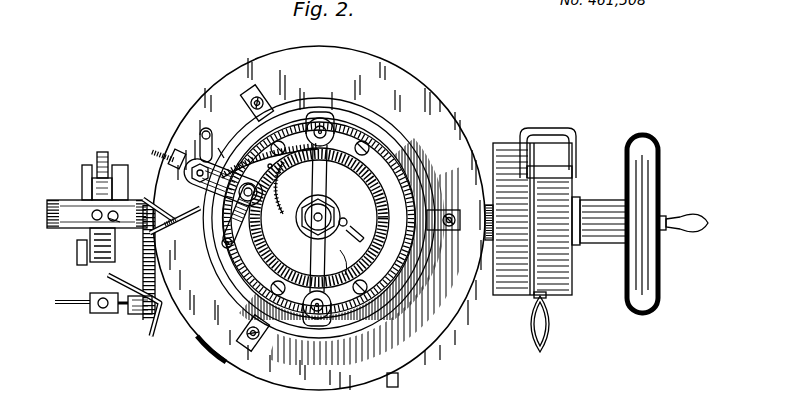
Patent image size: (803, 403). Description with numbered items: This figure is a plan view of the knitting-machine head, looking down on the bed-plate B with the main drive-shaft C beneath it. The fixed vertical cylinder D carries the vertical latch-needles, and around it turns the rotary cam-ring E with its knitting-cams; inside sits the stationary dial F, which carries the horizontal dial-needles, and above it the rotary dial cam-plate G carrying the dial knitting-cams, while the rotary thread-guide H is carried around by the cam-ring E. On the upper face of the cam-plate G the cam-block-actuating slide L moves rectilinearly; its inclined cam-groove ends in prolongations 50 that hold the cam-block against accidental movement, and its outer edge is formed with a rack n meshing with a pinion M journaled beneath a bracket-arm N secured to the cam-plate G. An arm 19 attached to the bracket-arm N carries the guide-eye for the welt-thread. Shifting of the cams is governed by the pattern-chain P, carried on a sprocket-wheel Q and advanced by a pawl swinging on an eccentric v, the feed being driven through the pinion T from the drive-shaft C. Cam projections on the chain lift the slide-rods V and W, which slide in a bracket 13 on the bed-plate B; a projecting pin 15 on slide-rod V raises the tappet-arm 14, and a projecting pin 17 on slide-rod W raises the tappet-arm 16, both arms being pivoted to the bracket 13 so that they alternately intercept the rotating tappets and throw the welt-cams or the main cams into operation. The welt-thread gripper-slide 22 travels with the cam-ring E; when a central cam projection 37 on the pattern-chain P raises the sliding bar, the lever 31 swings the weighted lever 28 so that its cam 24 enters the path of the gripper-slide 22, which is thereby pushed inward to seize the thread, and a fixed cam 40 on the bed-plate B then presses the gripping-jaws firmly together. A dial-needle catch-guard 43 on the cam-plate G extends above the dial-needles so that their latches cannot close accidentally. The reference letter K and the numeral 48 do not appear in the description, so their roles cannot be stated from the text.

The bed-plate B is at (319, 218).
The main drive-shaft C is at (484, 224).
The fixed vertical cylinder D is at (319, 218).
The rotary cam-ring E is at (273, 218).
The stationary dial F is at (351, 224).
The rotary dial cam-plate G is at (349, 258).
The rotary thread-guide H is at (410, 218).
The hub K is at (318, 208).
The cam-block-actuating slide L is at (315, 219).
The pinion M is at (262, 163).
The rack n is at (267, 158).
The bracket-arm N is at (223, 182).
The pattern-chain P is at (199, 148).
The sprocket-wheel Q is at (87, 166).
The pinion T is at (205, 140).
The slide-rod V is at (92, 215).
The slide-rod W is at (120, 213).
The eccentric v is at (160, 124).
The bracket 13 is at (47, 216).
The tappet-arm 14 is at (159, 206).
The projecting pin 15 is at (92, 188).
The tappet-arm 16 is at (175, 222).
The projecting pin 17 is at (116, 220).
The arm 19 is at (238, 214).
The gripper-slide 22 is at (162, 149).
The cam 24 is at (158, 300).
The lever 28 is at (130, 312).
The lever 31 is at (134, 302).
The cam projections 37 is at (102, 159).
The fixed cam 40 is at (211, 351).
The dial-needle catch-guard 43 is at (237, 244).
The block 48 is at (77, 255).
The prolongation 50 is at (289, 188).